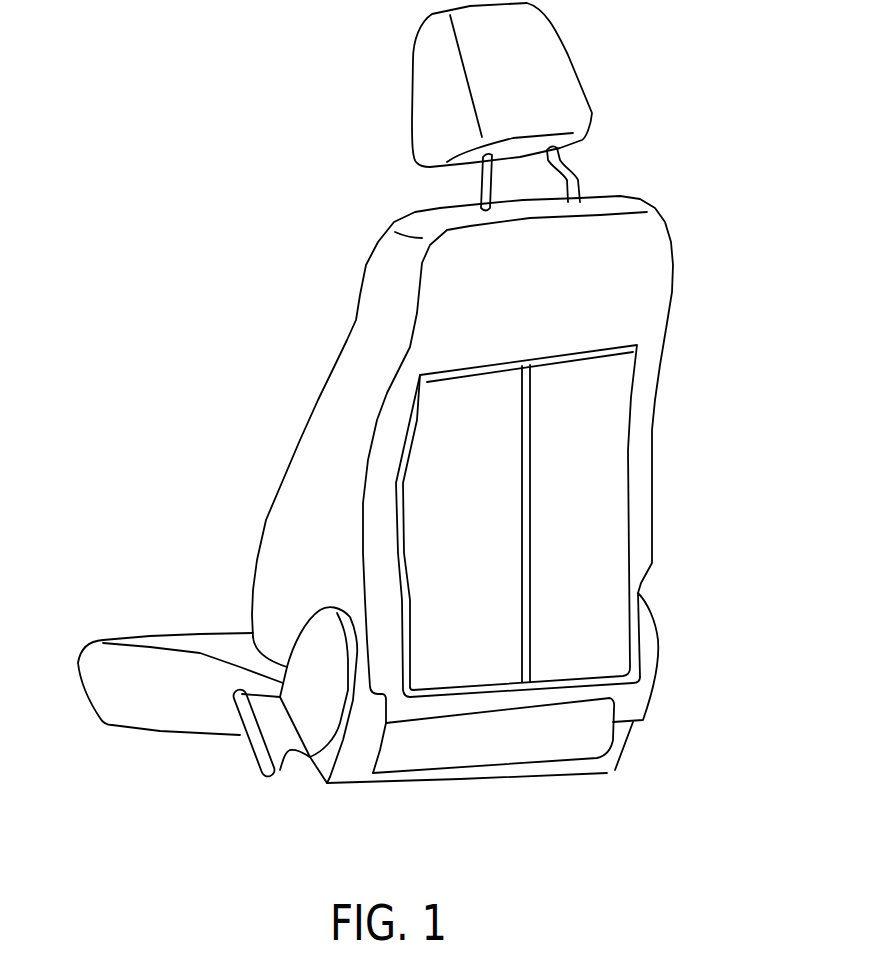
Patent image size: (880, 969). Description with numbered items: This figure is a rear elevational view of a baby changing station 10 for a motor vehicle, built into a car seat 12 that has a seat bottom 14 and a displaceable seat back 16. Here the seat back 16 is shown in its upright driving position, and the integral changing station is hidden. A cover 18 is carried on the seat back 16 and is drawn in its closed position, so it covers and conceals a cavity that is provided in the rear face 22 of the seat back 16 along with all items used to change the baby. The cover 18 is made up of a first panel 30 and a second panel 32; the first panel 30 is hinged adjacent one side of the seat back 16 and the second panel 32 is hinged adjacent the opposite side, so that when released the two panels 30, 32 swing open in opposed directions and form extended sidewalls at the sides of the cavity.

The baby changing station 10 is at (735, 231).
The car seat 12 is at (135, 602).
The seat bottom 14 is at (145, 700).
The seat back 16 is at (337, 417).
The cover 18 is at (693, 488).
The rear face 22 is at (597, 317).
The first panel 30 is at (477, 647).
The second panel 32 is at (595, 623).